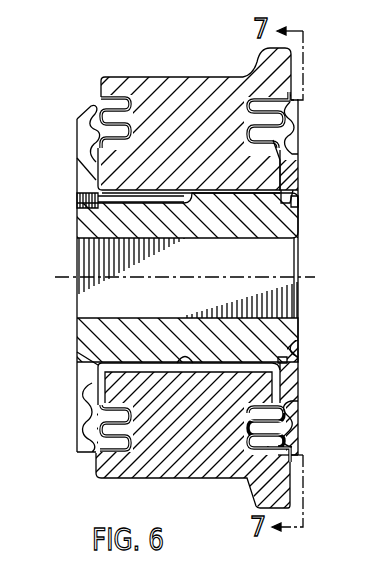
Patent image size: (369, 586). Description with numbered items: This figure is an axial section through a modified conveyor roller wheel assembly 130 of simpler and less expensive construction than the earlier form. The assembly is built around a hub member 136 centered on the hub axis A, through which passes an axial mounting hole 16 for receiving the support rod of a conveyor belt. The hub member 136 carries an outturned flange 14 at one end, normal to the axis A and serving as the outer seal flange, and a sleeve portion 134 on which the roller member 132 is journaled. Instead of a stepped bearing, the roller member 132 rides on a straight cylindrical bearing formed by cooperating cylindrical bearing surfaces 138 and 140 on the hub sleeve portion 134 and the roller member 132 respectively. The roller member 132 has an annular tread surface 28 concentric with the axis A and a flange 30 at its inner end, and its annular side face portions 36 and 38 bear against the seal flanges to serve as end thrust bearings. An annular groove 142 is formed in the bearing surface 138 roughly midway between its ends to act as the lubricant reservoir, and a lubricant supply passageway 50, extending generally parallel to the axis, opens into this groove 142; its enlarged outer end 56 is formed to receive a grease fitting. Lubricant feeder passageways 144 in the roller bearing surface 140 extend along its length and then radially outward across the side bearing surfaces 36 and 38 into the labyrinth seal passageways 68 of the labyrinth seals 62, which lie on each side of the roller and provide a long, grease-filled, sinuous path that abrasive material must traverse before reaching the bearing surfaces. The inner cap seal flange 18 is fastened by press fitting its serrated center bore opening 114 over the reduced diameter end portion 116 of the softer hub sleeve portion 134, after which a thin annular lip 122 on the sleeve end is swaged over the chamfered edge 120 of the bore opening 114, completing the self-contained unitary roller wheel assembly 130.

The hub axis A is at (70, 277).
The outturned flange 14 is at (80, 390).
The axial mounting hole 16 is at (292, 321).
The inner cap seal flange 18 is at (295, 388).
The annular tread surface 28 is at (190, 77).
The flange 30 is at (266, 64).
The annular side face portion 36 is at (95, 176).
The annular side face portion 38 is at (291, 168).
The lubrication passageway 50 is at (138, 204).
The enlarged outer end 56 is at (80, 206).
The labyrinth seal 62 is at (96, 118).
The labyrinth seal passageway 68 is at (100, 97).
The serrated center bore opening 114 is at (291, 350).
The reduced diameter end portion 116 is at (287, 196).
The chamfered edge 120 is at (288, 360).
The annular lip 122 is at (299, 204).
The conveyor roller wheel assembly 130 is at (101, 76).
The roller member 132 is at (158, 77).
The sleeve portion 134 is at (292, 224).
The hub member 136 is at (80, 356).
The cylindrical bearing surface 138 is at (217, 370).
The cylindrical bearing surface 140 is at (215, 362).
The annular groove 142 is at (184, 190).
The lubricant feeder passageway 144 is at (150, 363).